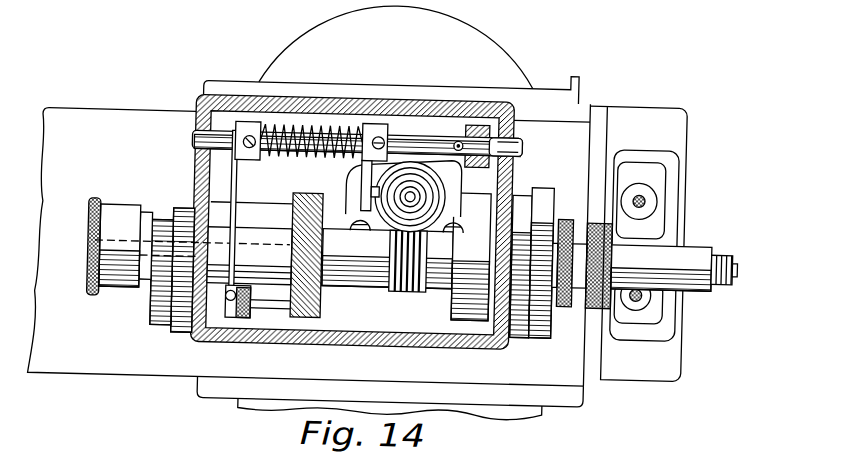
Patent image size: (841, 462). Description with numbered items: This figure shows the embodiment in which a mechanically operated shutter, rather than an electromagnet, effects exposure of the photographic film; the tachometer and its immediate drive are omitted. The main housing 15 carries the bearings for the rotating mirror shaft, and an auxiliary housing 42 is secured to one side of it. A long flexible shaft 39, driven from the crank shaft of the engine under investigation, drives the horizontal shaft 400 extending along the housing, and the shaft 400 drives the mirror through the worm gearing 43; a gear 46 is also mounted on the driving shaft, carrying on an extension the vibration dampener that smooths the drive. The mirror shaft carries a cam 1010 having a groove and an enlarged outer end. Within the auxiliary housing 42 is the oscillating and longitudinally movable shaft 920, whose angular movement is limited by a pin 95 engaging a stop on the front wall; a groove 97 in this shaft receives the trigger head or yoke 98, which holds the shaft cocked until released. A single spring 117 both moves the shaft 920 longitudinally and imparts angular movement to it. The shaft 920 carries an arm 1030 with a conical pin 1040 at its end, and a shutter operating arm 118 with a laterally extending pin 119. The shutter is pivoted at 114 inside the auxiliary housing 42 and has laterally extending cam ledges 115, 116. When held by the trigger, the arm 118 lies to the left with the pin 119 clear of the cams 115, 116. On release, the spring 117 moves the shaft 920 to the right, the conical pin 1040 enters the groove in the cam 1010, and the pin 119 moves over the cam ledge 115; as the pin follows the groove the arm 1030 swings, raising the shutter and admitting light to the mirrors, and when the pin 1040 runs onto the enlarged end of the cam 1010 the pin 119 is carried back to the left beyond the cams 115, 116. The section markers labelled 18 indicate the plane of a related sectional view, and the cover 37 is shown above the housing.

The housing 15 is at (112, 128).
The section line 18 is at (68, 182).
The cover 37 is at (440, 25).
The flexible shaft 39 is at (728, 250).
The auxiliary housing 42 is at (402, 341).
The worm gearing 43 is at (413, 291).
The gear 46 is at (307, 323).
The pin 95 is at (456, 141).
The groove 97 is at (500, 135).
The head 98 is at (475, 133).
The pivot 114 is at (184, 334).
The cam ledge 115 is at (219, 315).
The cam ledge 116 is at (238, 294).
The spring 117 is at (322, 130).
The shutter operating arm 118 is at (231, 185).
The pin 119 is at (253, 304).
The shaft 400 is at (374, 276).
The shaft 920 is at (398, 145).
The cam 1010 is at (454, 185).
The arm 1030 is at (360, 181).
The conical pin 1040 is at (367, 213).